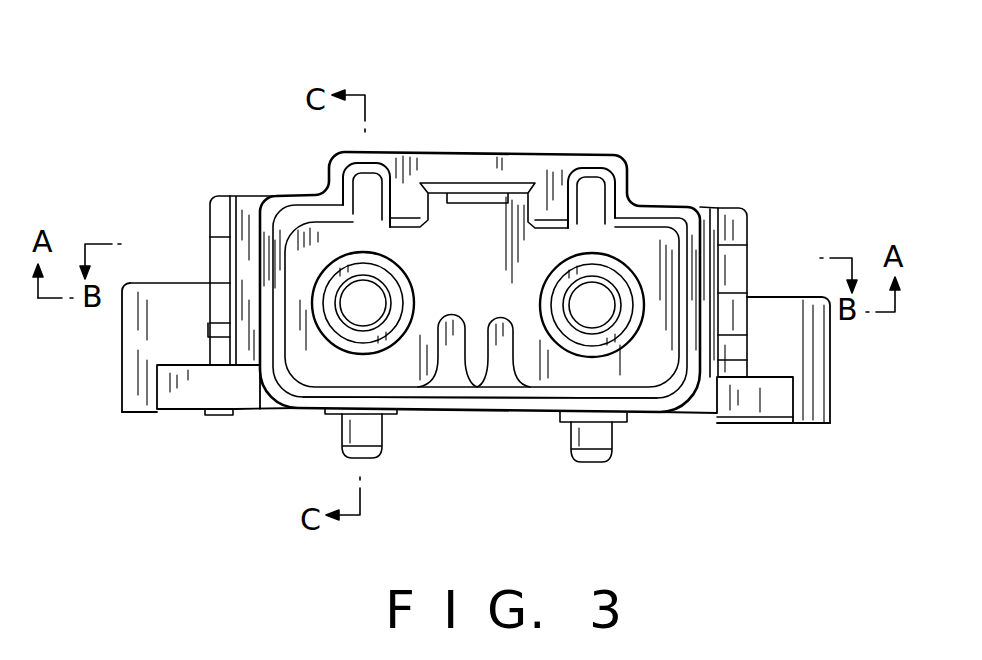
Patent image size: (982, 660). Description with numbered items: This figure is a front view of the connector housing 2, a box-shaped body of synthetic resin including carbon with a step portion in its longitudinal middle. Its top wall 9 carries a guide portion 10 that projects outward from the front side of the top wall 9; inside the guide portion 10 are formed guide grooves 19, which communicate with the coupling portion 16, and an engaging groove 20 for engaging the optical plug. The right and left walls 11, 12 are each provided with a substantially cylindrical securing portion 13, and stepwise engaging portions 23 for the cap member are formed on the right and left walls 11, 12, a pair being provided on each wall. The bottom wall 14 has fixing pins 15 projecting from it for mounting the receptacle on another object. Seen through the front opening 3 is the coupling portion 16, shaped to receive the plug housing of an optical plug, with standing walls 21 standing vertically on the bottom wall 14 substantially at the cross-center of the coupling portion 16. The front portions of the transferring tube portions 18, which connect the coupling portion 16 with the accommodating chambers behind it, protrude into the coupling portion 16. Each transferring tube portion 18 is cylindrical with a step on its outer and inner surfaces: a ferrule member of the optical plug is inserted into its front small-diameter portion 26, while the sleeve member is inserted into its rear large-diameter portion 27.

The connector housing 2 is at (625, 147).
The front opening 3 is at (325, 401).
The top wall 9 is at (255, 207).
The guide portion 10 is at (503, 152).
The left wall 11 is at (262, 258).
The right wall 12 is at (698, 250).
The securing portion 13 is at (130, 365).
The bottom wall 14 is at (480, 412).
The fixing pin 15 is at (371, 458).
The coupling portion 16 is at (627, 373).
The transferring tube portion 18 is at (205, 410).
The guide groove 19 is at (362, 180).
The engaging groove 20 is at (435, 195).
The standing wall 21 is at (452, 355).
The engaging portion 23 is at (235, 263).
The front small-diameter portion 26 is at (345, 338).
The rear large-diameter portion 27 is at (350, 330).